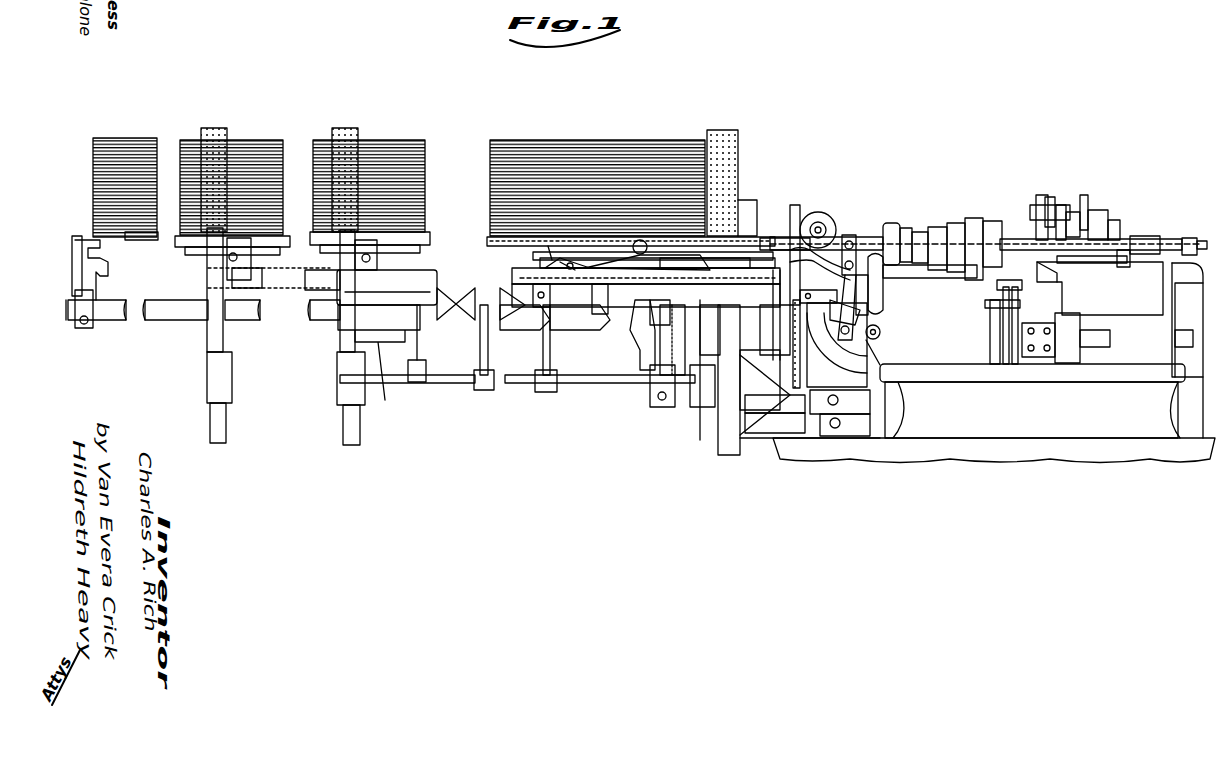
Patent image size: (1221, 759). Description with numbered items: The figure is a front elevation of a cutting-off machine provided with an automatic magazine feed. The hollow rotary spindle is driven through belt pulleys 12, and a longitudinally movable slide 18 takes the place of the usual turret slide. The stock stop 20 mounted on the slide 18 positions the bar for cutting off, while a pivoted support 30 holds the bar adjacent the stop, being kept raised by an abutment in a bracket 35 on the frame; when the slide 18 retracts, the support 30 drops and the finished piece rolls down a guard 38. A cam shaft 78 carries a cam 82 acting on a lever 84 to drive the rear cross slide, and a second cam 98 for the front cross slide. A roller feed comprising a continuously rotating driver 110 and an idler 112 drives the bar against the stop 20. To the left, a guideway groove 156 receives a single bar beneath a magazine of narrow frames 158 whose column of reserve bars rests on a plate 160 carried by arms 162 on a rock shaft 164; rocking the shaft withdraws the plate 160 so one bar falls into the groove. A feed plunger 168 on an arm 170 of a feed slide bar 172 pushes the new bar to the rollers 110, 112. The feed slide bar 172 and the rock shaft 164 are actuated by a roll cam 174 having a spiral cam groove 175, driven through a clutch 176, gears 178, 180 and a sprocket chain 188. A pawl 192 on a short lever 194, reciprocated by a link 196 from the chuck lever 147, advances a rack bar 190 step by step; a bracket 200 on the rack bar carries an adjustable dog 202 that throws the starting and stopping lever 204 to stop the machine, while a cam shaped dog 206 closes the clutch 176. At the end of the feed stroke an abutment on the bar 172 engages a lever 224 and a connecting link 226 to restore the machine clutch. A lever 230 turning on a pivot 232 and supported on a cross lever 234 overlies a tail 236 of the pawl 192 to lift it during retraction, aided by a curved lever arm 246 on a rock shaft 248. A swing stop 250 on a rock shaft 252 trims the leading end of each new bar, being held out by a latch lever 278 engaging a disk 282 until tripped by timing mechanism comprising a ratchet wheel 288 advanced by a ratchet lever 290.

The belt pulleys 12 is at (930, 232).
The longitudinally movable slide 18 is at (1091, 236).
The stop 20 is at (1185, 238).
The support 30 is at (1145, 248).
The bracket 35 is at (1115, 260).
The guard 38 is at (1120, 347).
The cam shaft 78 is at (1100, 345).
The cam 82 is at (1000, 364).
The lever 84 is at (1000, 318).
The cam 98 is at (1032, 400).
The driver 110 is at (818, 212).
The idler 112 is at (838, 228).
The chuck lever 147 is at (883, 292).
The groove 156 is at (428, 246).
The narrow frames 158 is at (212, 128).
The plate 160 is at (430, 232).
The arms 162 is at (262, 262).
The rock shaft 164 is at (315, 284).
The feed plunger 168 is at (98, 258).
The arm 170 is at (92, 284).
The feed slide bar 172 is at (140, 320).
The roll cam 174 is at (486, 296).
The spiral cam groove 175 is at (510, 312).
The clutch 176 is at (668, 322).
The gear 178 is at (672, 338).
The gear 180 is at (700, 392).
The sprocket chain 188 is at (805, 395).
The rack bar 190 is at (790, 330).
The pawl 192 is at (590, 246).
The lever 194 is at (565, 246).
The link 196 is at (855, 238).
The bracket 200 is at (840, 360).
The adjustable dog 202 is at (875, 308).
The starting and stopping lever 204 is at (881, 325).
The cam shaped dog 206 is at (615, 312).
The lever 224 is at (668, 368).
The connecting link 226 is at (740, 385).
The lever 230 is at (665, 246).
The pivot 232 is at (642, 232).
The cross lever 234 is at (770, 235).
The tail 236 is at (555, 240).
The curved lever arm 246 is at (540, 358).
The rock shaft 248 is at (545, 378).
The swing stop 250 is at (1085, 200).
The rock shaft 252 is at (1100, 218).
The latch lever 278 is at (1062, 200).
The disk 282 is at (1066, 212).
The ratchet wheel 288 is at (1035, 205).
The ratchet lever 290 is at (1050, 195).